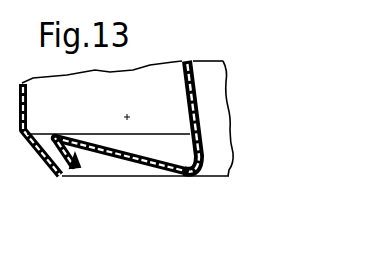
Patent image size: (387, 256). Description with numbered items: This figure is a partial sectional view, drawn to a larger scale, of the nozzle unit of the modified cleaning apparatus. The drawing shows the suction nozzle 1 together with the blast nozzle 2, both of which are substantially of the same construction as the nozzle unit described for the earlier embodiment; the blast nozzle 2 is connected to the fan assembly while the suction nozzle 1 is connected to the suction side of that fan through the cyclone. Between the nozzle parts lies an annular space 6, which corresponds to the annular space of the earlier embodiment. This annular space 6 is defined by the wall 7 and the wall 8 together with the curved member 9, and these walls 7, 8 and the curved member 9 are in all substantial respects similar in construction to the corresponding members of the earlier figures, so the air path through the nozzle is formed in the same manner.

The suction nozzle 1 is at (207, 162).
The blast nozzle 2 is at (48, 166).
The annular space 6 is at (93, 163).
The wall 7 is at (150, 168).
The wall 8 is at (77, 165).
The curved member 9 is at (52, 150).